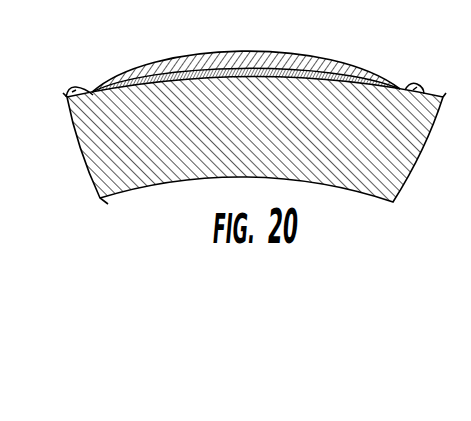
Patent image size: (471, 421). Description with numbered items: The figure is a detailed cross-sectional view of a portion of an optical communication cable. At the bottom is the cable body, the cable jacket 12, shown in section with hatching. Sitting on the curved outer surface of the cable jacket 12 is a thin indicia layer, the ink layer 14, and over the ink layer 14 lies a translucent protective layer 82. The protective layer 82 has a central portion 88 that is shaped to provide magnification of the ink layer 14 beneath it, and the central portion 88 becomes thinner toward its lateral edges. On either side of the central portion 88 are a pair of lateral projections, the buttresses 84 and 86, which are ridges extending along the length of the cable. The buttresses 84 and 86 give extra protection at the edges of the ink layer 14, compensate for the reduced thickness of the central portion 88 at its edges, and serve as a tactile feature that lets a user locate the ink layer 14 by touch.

The cable jacket 12 is at (397, 160).
The ink layer 14 is at (331, 66).
The protective layer 82 is at (262, 51).
The buttress 84 is at (70, 90).
The buttress 86 is at (416, 86).
The central portion 88 is at (205, 51).